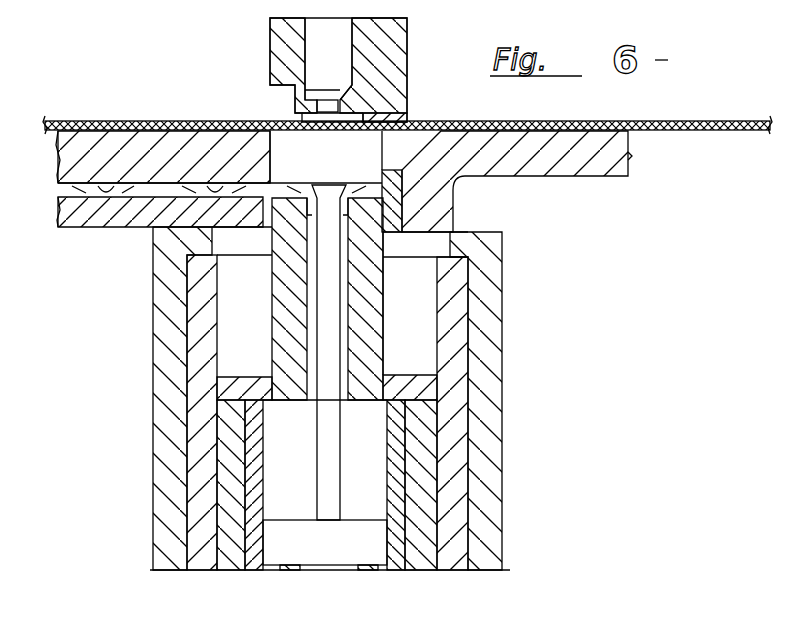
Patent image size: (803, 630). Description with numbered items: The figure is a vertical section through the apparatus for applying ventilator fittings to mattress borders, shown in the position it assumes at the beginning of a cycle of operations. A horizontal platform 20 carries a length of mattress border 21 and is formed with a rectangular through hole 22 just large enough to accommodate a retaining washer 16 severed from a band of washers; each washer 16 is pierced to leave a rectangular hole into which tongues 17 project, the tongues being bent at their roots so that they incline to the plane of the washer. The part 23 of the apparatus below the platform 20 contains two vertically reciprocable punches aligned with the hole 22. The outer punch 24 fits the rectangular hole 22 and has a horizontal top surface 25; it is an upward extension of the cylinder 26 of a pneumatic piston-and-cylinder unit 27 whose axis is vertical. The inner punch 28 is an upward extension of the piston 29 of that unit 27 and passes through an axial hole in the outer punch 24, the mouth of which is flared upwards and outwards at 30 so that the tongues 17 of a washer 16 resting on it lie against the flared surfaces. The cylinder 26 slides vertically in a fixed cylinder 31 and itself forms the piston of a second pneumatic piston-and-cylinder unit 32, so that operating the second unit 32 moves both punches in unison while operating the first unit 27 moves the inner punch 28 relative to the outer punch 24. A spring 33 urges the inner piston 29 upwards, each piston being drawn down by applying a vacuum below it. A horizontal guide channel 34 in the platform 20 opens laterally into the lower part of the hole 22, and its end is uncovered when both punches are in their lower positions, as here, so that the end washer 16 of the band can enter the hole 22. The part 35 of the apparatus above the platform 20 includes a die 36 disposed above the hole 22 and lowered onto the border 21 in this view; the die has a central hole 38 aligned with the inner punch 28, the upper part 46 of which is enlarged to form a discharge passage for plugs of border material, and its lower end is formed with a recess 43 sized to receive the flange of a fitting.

The retaining washer 16 is at (312, 196).
The tongues 17 is at (358, 183).
The horizontal platform 20 is at (78, 158).
The border 21 is at (112, 122).
The rectangular through hole 22 is at (326, 157).
The part of the apparatus below the platform 23 is at (509, 338).
The outer punch 24 is at (372, 335).
The top surface 25 is at (376, 192).
The cylinder 26 is at (417, 572).
The pneumatic piston-and-cylinder unit 27 is at (390, 575).
The inner punch 28 is at (327, 295).
The piston 29 is at (290, 535).
The flared mouth 30 is at (341, 192).
The fixed cylinder 31 is at (197, 562).
The second pneumatic piston-and-cylinder unit 32 is at (222, 575).
The spring 33 is at (289, 572).
The guide channel 34 is at (144, 200).
The part of the apparatus above the platform 35 is at (416, 57).
The die 36 is at (317, 107).
The central hole 38 is at (330, 104).
The recess 43 is at (363, 118).
The upper part of the hole 46 is at (330, 600).